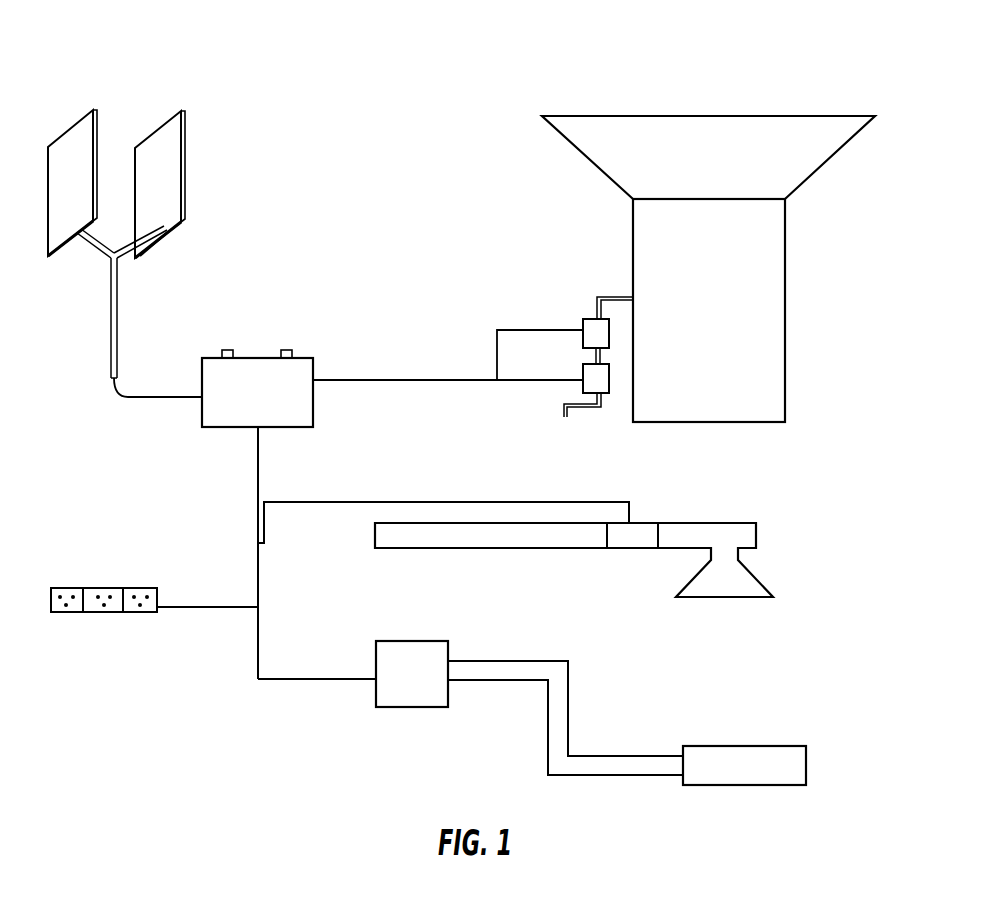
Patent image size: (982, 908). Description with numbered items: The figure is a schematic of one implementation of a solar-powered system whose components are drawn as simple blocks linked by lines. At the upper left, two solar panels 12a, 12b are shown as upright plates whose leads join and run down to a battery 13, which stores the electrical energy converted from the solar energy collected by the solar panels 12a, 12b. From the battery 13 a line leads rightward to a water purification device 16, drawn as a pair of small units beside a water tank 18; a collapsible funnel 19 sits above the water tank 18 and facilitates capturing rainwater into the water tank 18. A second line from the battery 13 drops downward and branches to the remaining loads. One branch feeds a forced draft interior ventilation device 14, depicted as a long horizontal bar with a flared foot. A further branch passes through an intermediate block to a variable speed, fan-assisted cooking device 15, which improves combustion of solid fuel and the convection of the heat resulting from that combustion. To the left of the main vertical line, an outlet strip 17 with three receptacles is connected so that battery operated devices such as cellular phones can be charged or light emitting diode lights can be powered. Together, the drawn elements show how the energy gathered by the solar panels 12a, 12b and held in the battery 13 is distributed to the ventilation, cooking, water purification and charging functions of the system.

The solar panel 12a is at (65, 130).
The solar panel 12b is at (157, 128).
The battery 13 is at (258, 357).
The forced draft interior ventilation device 14 is at (790, 547).
The variable speed, fan-assisted cooking device 15 is at (834, 746).
The water purification device 16 is at (538, 390).
The outlet strip 17 is at (75, 613).
The water tank 18 is at (787, 322).
The collapsible funnel 19 is at (827, 162).